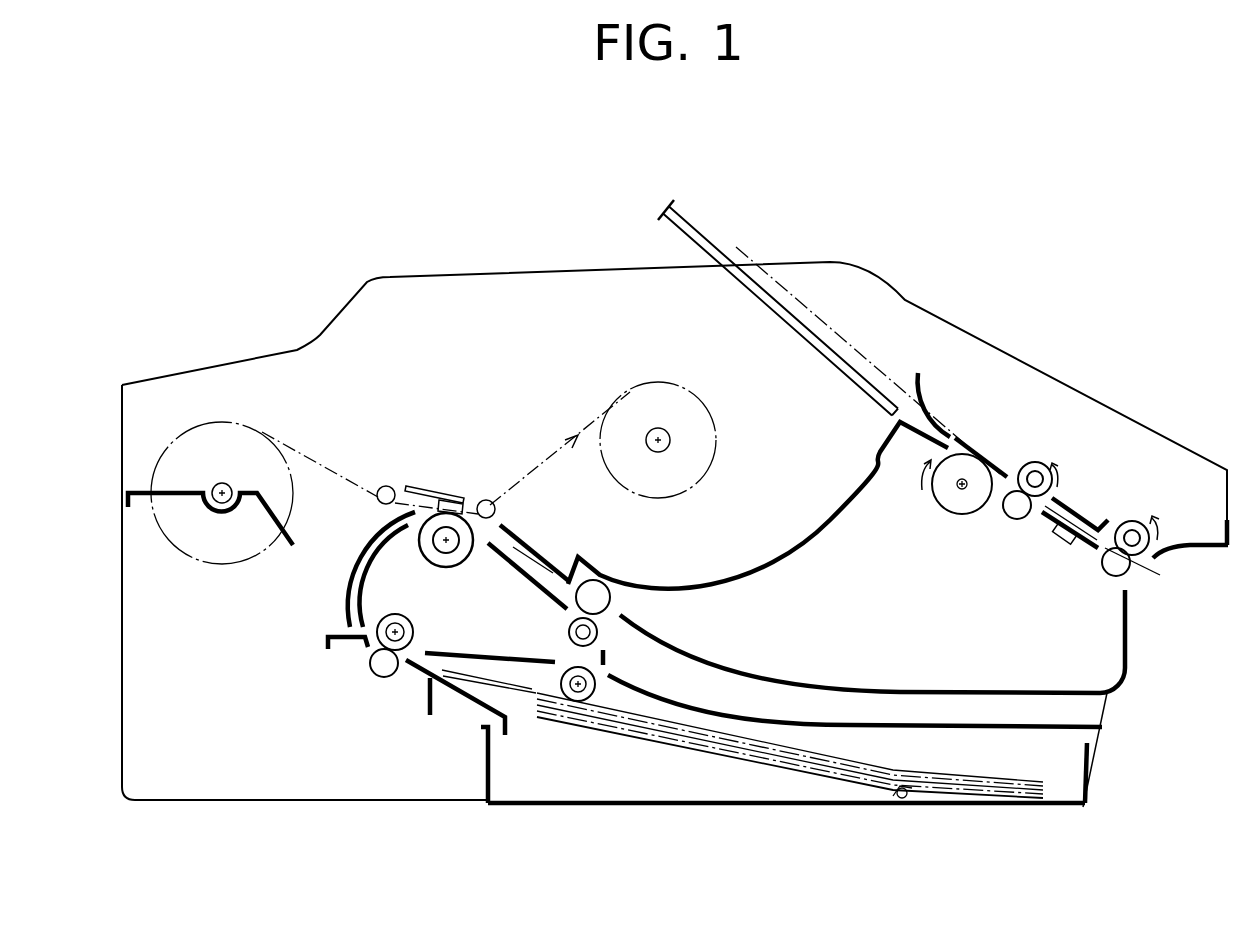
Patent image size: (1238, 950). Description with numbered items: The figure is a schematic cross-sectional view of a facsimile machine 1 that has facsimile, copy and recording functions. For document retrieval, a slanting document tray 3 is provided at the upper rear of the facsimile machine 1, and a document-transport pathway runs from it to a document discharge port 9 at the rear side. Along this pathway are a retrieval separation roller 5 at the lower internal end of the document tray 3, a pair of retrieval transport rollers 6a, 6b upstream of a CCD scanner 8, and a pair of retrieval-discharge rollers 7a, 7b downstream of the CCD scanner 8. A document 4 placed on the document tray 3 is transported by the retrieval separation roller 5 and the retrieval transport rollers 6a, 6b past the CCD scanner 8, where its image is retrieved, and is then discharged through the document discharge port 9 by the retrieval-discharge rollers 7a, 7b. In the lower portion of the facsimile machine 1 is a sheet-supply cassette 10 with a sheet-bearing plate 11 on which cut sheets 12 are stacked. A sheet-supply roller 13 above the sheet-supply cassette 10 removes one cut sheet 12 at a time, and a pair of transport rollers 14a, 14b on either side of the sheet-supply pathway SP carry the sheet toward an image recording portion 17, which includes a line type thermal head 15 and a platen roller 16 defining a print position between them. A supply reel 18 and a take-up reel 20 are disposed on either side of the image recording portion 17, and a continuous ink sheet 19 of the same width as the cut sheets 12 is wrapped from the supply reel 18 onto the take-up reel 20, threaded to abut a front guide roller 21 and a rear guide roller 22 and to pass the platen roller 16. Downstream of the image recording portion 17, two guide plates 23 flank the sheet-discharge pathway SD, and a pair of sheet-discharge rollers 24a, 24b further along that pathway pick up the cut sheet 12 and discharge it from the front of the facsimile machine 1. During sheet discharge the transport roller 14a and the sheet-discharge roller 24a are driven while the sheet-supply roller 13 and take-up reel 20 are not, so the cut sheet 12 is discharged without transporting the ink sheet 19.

The facsimile machine 1 is at (538, 260).
The document tray 3 is at (693, 230).
The document 4 is at (758, 232).
The retrieval separation roller 5 is at (943, 497).
The retrieval transport roller 6a is at (1022, 470).
The retrieval transport roller 6b is at (1005, 510).
The retrieval-discharge roller 7a is at (1127, 520).
The retrieval-discharge roller 7b is at (1127, 575).
The CCD scanner 8 is at (1060, 533).
The document discharge port 9 is at (1160, 575).
The sheet-supply cassette 10 is at (648, 817).
The sheet-bearing plate 11 is at (723, 762).
The cut sheets 12 is at (803, 747).
The sheet-supply roller 13 is at (580, 700).
The transport roller 14a is at (412, 631).
The transport roller 14b is at (373, 687).
The line type thermal head 15 is at (453, 497).
The platen roller 16 is at (467, 550).
The image recording portion 17 is at (416, 459).
The supply reel 18 is at (213, 513).
The ink sheet 19 is at (553, 450).
The take-up reel 20 is at (670, 440).
The front guide roller 21 is at (383, 485).
The rear guide roller 22 is at (488, 499).
The guide plates 23 is at (527, 560).
The sheet-discharge roller 24a is at (569, 631).
The sheet-discharge roller 24b is at (597, 593).
The sheet-discharge pathway SD is at (560, 552).
The sheet-supply pathway SP is at (340, 558).